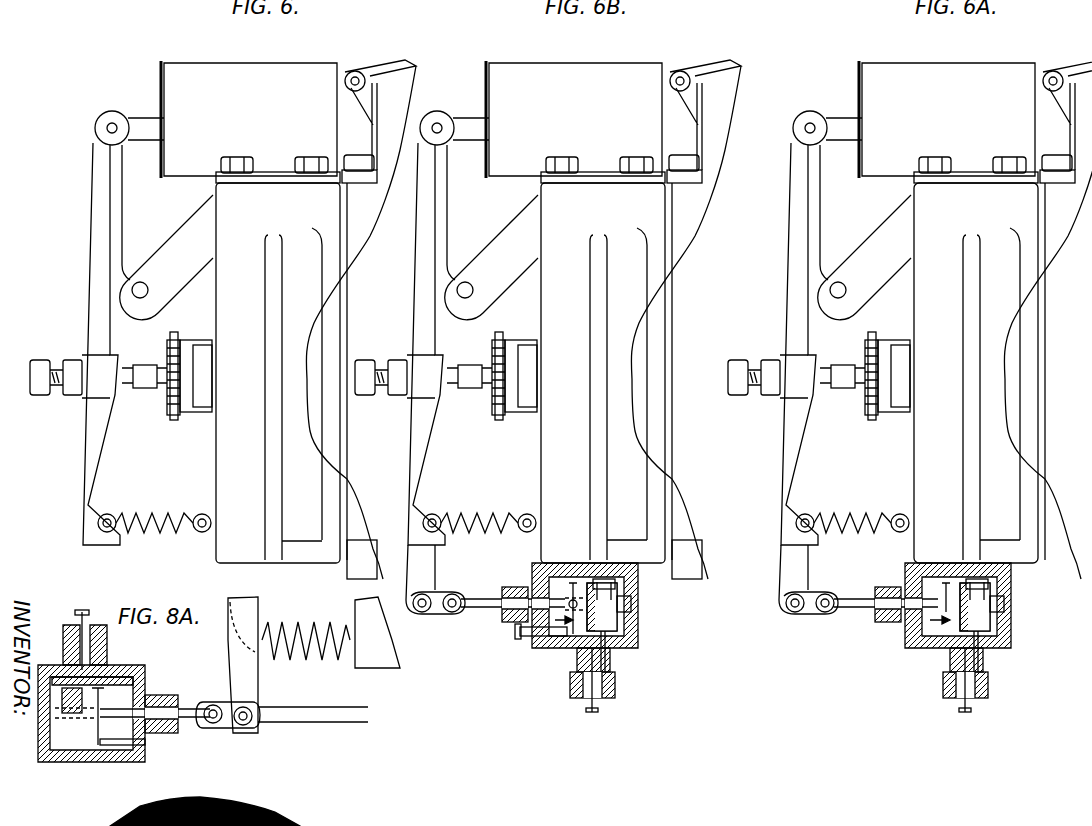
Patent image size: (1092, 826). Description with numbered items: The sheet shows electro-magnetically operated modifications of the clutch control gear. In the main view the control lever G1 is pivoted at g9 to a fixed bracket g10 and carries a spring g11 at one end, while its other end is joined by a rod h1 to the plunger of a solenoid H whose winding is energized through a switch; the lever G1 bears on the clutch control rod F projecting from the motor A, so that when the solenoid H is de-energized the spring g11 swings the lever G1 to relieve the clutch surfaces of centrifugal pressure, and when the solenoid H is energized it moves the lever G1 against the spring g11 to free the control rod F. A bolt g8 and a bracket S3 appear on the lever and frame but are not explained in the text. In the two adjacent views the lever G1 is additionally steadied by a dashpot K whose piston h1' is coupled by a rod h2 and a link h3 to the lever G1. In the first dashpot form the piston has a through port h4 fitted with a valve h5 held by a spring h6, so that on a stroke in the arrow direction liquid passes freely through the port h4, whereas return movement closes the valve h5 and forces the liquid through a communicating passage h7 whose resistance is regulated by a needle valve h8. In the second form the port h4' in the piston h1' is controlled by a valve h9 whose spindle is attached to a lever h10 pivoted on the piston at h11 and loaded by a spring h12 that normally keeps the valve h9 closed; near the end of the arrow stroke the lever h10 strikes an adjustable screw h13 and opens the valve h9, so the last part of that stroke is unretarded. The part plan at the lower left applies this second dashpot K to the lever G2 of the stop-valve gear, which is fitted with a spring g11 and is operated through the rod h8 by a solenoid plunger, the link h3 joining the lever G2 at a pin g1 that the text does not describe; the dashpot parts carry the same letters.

In FIG. 6, the solenoid H is at (226, 58).
In FIG. 6B, the solenoid H is at (574, 108).
In FIG. 6A, the solenoid H is at (947, 108).
In FIG. 6, the rod h1 is at (129, 111).
In FIG. 6B, the rod h1 is at (454, 111).
In FIG. 6A, the rod h1 is at (925, 359).
In FIG. 6, the control lever G1 is at (97, 190).
In FIG. 6B, the control lever G1 is at (416, 344).
In FIG. 6A, the control lever G1 is at (788, 344).
In FIG. 6, the fixed bracket g10 is at (168, 246).
In FIG. 6B, the fixed bracket g10 is at (491, 257).
In FIG. 6A, the fixed bracket g10 is at (864, 257).
In FIG. 6, the pivot g9 is at (147, 288).
In FIG. 6B, the pivot g9 is at (485, 281).
In FIG. 6A, the pivot g9 is at (857, 281).
In FIG. 6, the adjusting bolt g8 is at (53, 362).
In FIG. 6B, the adjusting bolt g8 is at (381, 358).
In FIG. 6A, the adjusting bolt g8 is at (754, 358).
In FIG. 6, the control rod F is at (161, 383).
In FIG. 6B, the control rod F is at (492, 376).
In FIG. 6A, the control rod F is at (865, 376).
In FIG. 6, the motor A is at (278, 360).
In FIG. 6B, the motor A is at (603, 360).
In FIG. 6A, the motor A is at (976, 360).
In FIG. 6, the spring g11 is at (137, 535).
In FIG. 6B, the spring g11 is at (479, 506).
In FIG. 6A, the spring g11 is at (852, 506).
In FIG. 8A, the spring g11 is at (318, 652).
In FIG. 6, the bracket S3 is at (395, 64).
In FIG. 6B, the bracket S3 is at (724, 121).
In FIG. 6A, the bracket S3 is at (1066, 109).
In FIG. 6B, the rod h2 is at (513, 584).
In FIG. 6A, the rod h2 is at (886, 588).
In FIG. 8A, the rod h2 is at (190, 720).
In FIG. 6B, the link h3 is at (435, 628).
In FIG. 6A, the link h3 is at (808, 630).
In FIG. 8A, the link h3 is at (218, 726).
In FIG. 6B, the lever h10 is at (563, 581).
In FIG. 6B, the valve h9 is at (614, 564).
In FIG. 8A, the valve h9 is at (106, 640).
In FIG. 6B, the port h4' is at (648, 600).
In FIG. 6B, the dashpot K is at (601, 605).
In FIG. 6A, the dashpot K is at (983, 614).
In FIG. 8A, the dashpot K is at (132, 674).
In FIG. 6B, the piston h1' is at (626, 624).
In FIG. 6B, the communicating passage way h7 is at (633, 674).
In FIG. 6A, the communicating passage way h7 is at (942, 670).
In FIG. 8A, the communicating passage way h7 is at (106, 672).
In FIG. 6B, the spring h12 is at (633, 670).
In FIG. 8A, the spring h12 is at (92, 724).
In FIG. 6B, the needle valve / rod h8 is at (581, 696).
In FIG. 6A, the needle valve / rod h8 is at (994, 680).
In FIG. 8A, the needle valve / rod h8 is at (81, 624).
In FIG. 6B, the adjustable screw h13 is at (515, 641).
In FIG. 8A, the adjustable screw h13 is at (160, 737).
In FIG. 6B, the pivot h11 is at (541, 661).
In FIG. 8A, the pivot h11 is at (102, 712).
In FIG. 6A, the spring h6 is at (950, 574).
In FIG. 6A, the valve h5 is at (992, 565).
In FIG. 6A, the through port h4 is at (1022, 601).
In FIG. 8A, the through port h4 is at (59, 674).
In FIG. 8A, the pivot g1 is at (247, 726).
In FIG. 8A, the lever G2 is at (242, 607).